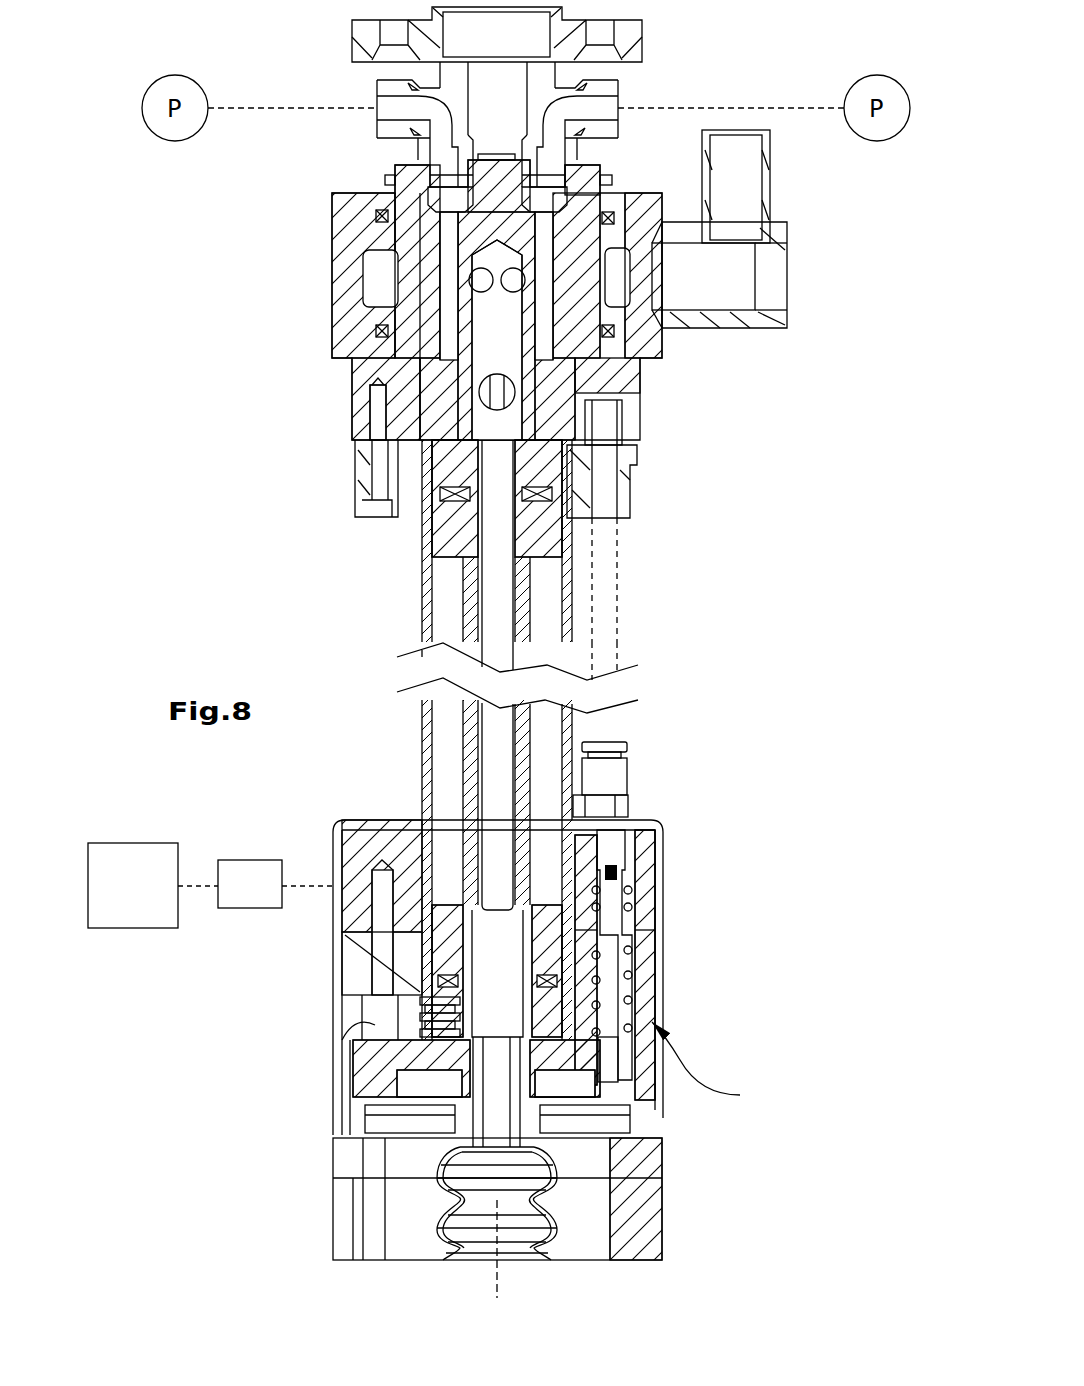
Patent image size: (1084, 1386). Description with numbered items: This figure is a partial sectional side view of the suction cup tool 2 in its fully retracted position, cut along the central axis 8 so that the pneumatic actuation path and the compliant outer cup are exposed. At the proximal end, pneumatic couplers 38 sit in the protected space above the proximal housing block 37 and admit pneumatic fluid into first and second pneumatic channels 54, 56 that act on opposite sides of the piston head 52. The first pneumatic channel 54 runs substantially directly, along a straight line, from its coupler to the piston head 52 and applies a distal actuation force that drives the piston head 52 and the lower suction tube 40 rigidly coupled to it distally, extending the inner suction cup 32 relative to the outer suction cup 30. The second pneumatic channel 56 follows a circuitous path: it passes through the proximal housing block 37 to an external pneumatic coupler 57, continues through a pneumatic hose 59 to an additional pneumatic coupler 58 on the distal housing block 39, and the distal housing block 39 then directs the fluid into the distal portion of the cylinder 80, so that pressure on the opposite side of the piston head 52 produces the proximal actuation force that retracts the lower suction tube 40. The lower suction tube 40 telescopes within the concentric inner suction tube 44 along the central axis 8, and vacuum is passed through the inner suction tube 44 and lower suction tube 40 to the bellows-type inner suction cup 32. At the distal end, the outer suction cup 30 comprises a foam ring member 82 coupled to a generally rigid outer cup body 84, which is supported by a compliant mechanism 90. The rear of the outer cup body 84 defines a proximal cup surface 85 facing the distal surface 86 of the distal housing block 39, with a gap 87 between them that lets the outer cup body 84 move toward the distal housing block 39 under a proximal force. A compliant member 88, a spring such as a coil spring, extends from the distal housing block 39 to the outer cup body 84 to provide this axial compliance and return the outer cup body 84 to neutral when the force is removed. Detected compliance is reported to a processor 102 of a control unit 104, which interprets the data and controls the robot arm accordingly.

The tool 2 is at (219, 272).
The central axis 8 is at (497, 1270).
The outer suction cup 30 is at (556, 1220).
The inner suction cup 32 is at (570, 1240).
The proximal housing block 37 is at (498, 203).
The pneumatic couplers 38 is at (378, 88).
The distal housing block 39 is at (430, 970).
The lower suction tube 40 is at (533, 727).
The inner suction tube 44 is at (530, 622).
The piston head 52 is at (440, 545).
The first pneumatic channel 54 is at (445, 372).
The second pneumatic channel 56 is at (548, 358).
The external pneumatic coupler 57 is at (630, 485).
The additional pneumatic coupler 58 is at (612, 778).
The pneumatic hose 59 is at (618, 580).
The cylinder 80 is at (421, 792).
The ring member 82 is at (635, 1238).
The outer cup body 84 is at (375, 1072).
The proximal cup surface 85 is at (365, 1040).
The distal surface 86 is at (593, 972).
The gap 87 is at (563, 1018).
The compliant member 88 is at (620, 982).
The compliant mechanism 90 is at (712, 1065).
The processor 102 is at (255, 884).
The control unit 104 is at (133, 885).